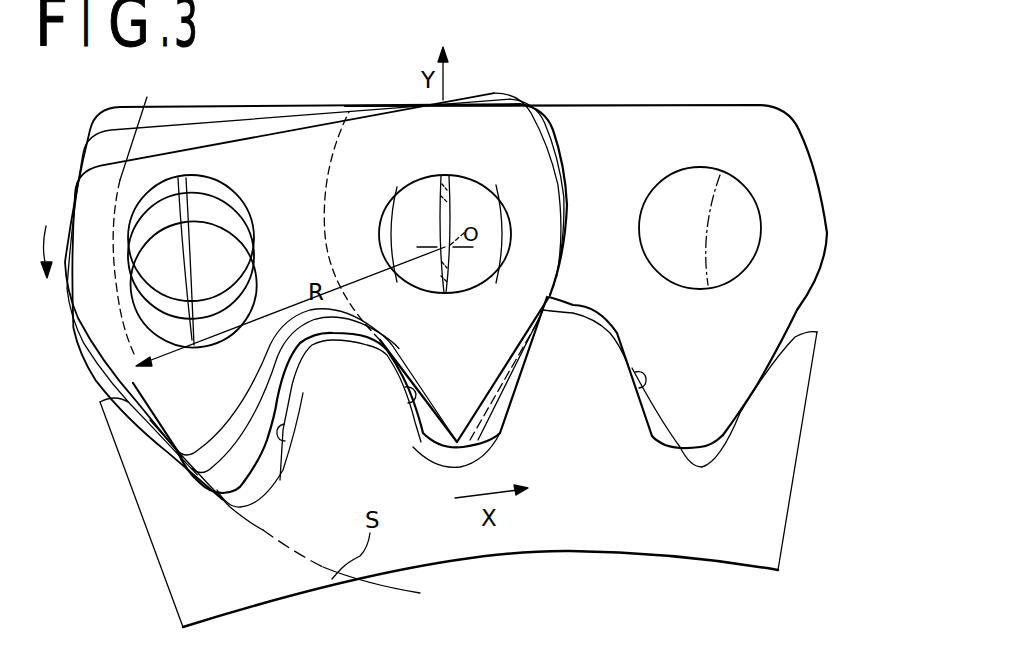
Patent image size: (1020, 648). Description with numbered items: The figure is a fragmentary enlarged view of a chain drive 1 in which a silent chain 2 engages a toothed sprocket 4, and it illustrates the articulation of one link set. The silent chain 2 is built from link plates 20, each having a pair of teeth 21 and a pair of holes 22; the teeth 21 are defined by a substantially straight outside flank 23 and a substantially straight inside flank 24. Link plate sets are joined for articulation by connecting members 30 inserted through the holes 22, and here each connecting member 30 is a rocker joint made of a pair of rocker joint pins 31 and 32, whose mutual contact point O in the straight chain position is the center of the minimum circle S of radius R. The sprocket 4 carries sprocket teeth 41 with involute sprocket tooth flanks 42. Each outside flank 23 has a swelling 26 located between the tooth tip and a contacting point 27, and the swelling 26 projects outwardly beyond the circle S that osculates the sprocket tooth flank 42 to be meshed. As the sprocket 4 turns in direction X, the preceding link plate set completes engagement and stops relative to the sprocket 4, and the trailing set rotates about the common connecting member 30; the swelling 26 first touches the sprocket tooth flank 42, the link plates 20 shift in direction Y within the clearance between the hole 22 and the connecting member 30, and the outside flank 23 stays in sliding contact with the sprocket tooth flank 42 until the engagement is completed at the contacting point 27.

The chain drive 1 is at (770, 104).
The silent chain 2 is at (547, 104).
The sprocket 4 is at (580, 516).
The link plate 20 is at (285, 132).
The tooth 21 is at (203, 397).
The hole 22 is at (240, 204).
The outside flank 23 is at (124, 400).
The inside flank 24 is at (256, 400).
The swelling 26 is at (182, 452).
The contacting point 27 is at (193, 466).
The connecting member 30 is at (434, 182).
The rocker joint pin 31 is at (407, 213).
The rocker joint pin 32 is at (477, 210).
The sprocket tooth 41 is at (356, 408).
The sprocket tooth flank 42 is at (287, 443).